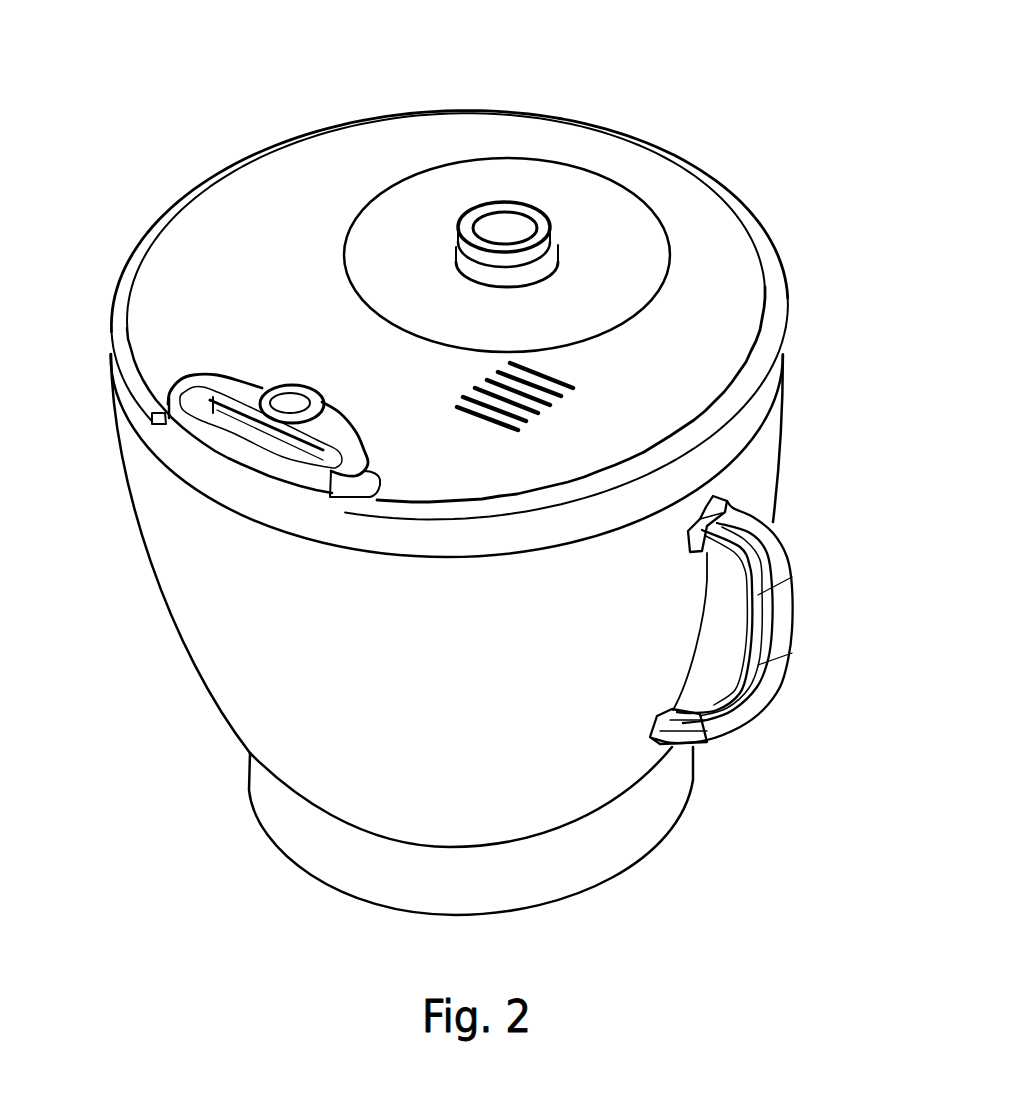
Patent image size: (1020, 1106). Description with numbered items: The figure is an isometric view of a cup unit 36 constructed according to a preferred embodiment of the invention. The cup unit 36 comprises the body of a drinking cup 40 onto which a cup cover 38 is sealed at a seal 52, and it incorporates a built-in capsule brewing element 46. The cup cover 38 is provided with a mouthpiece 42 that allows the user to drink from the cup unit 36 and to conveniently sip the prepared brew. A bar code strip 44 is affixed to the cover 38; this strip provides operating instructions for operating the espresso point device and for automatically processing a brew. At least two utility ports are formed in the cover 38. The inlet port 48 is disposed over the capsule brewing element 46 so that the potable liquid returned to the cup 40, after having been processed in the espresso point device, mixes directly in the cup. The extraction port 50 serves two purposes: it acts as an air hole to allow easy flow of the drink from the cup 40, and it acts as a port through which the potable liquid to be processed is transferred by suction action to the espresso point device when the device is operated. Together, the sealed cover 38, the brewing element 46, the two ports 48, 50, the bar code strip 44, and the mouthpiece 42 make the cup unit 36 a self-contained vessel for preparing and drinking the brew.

The cup unit 36 is at (772, 97).
The cup cover 38 is at (187, 243).
The drinking cup 40 is at (277, 782).
The mouthpiece 42 is at (228, 438).
The bar code strip 44 is at (575, 388).
The capsule brewing element 46 is at (670, 250).
The inlet port 48 is at (545, 208).
The extraction port 50 is at (310, 388).
The seal 52 is at (125, 396).